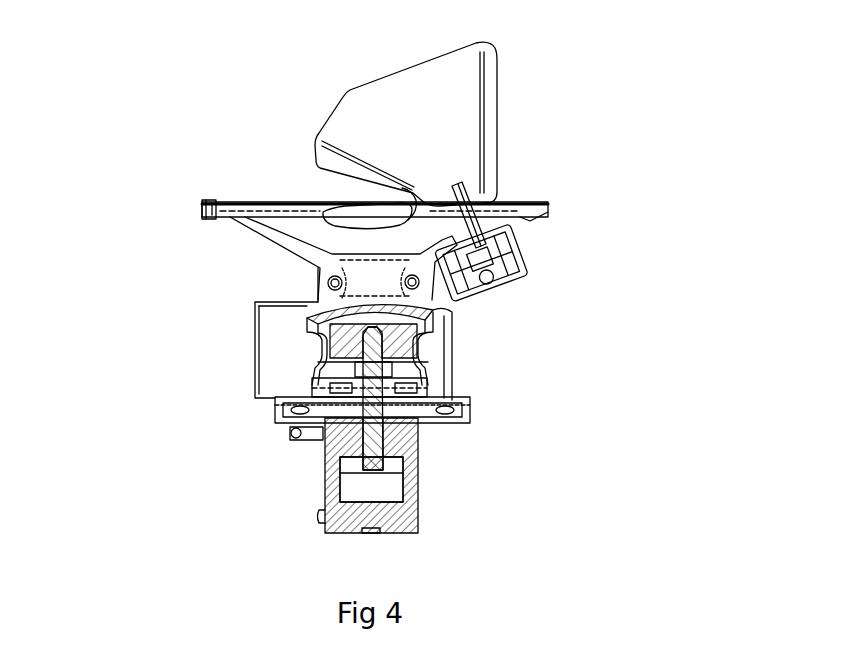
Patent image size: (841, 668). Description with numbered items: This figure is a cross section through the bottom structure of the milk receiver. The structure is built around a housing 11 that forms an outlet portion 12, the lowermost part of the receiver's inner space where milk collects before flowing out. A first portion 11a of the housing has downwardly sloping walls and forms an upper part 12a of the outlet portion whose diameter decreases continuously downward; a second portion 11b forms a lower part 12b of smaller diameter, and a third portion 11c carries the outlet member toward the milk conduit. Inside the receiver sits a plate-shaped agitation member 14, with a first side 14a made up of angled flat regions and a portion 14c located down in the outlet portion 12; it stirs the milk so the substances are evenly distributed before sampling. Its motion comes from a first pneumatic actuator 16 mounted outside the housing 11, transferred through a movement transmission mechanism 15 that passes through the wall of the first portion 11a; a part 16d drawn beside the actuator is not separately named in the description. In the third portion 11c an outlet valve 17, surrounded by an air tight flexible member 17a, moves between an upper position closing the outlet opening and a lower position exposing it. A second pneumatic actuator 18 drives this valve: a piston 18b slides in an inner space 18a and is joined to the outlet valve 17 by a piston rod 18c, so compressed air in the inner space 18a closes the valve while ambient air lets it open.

The housing 11 is at (267, 264).
The first portion 11a is at (250, 233).
The second portion 11b is at (328, 277).
The third portion 11c is at (447, 368).
The outlet portion 12 is at (329, 177).
The upper part 12a is at (315, 230).
The lower part 12b is at (370, 273).
The agitation member 14 is at (462, 81).
The first side 14a is at (383, 120).
The portion 14c is at (361, 213).
The movement transmission mechanism 15 is at (477, 196).
The first pneumatic actuator 16 is at (527, 252).
The actuator housing 16d is at (260, 353).
The outlet valve 17 is at (420, 320).
The air tight flexible member 17a is at (420, 336).
The second pneumatic actuator 18 is at (398, 517).
The inner space 18a is at (365, 483).
The piston 18b is at (360, 462).
The piston rod 18c is at (378, 427).